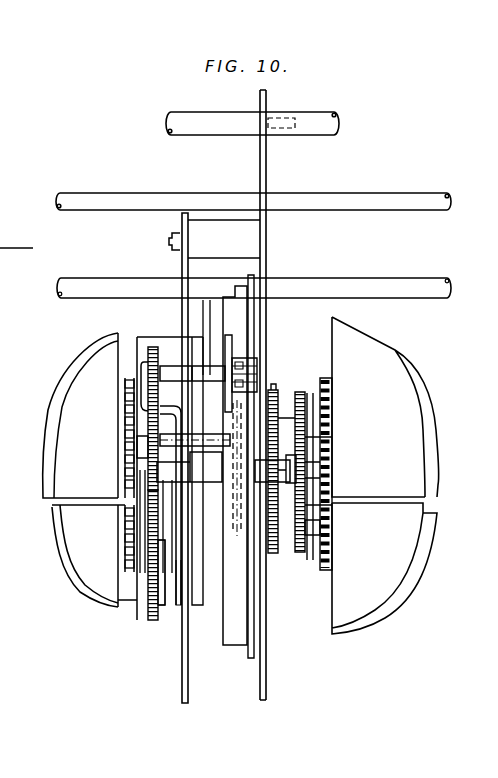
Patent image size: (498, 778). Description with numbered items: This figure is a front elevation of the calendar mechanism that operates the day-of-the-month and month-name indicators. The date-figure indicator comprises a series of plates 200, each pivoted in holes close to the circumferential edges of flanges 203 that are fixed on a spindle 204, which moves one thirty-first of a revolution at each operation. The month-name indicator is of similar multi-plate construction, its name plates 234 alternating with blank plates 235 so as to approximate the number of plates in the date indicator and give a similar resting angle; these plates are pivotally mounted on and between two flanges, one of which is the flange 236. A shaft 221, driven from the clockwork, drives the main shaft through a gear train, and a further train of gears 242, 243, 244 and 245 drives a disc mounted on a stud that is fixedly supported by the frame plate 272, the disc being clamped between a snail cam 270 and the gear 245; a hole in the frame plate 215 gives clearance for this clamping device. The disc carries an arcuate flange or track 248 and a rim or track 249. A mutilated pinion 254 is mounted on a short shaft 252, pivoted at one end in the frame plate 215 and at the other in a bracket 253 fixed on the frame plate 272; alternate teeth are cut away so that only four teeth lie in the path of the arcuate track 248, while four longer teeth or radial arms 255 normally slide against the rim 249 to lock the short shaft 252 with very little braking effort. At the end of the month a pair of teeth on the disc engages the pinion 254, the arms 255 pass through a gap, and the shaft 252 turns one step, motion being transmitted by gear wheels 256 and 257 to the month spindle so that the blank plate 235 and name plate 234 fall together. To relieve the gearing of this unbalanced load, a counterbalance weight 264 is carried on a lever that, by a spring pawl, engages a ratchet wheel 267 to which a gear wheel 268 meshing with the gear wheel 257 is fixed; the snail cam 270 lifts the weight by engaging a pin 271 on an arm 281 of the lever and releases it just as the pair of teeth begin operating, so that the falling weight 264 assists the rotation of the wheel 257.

The plates 200 is at (405, 408).
The flanges 203 is at (328, 572).
The spindle 204 is at (205, 472).
The frame plate 215 is at (268, 155).
The shaft 221 is at (384, 262).
The plates 234 is at (72, 548).
The blank plates 235 is at (68, 392).
The flange 236 is at (122, 552).
The gear 242 is at (298, 458).
The gear 243 is at (306, 393).
The gear 244 is at (277, 391).
The gear 245 is at (300, 530).
The arcuate flange or track 248 is at (251, 661).
The rim or track 249 is at (228, 634).
The short shaft 252 is at (208, 372).
The bracket 253 is at (140, 374).
The mutilated pinion 254 is at (248, 357).
The teeth or radial arms 255 is at (233, 337).
The gear wheel 256 is at (150, 352).
The gear wheel 257 is at (150, 457).
The counterbalance weight 264 is at (173, 605).
The ratchet wheel 267 is at (160, 608).
The gear wheel 268 is at (147, 612).
The snail cam 270 is at (238, 536).
The pin 271 is at (195, 438).
The frame plate 272 is at (180, 217).
The arm 281 is at (134, 432).